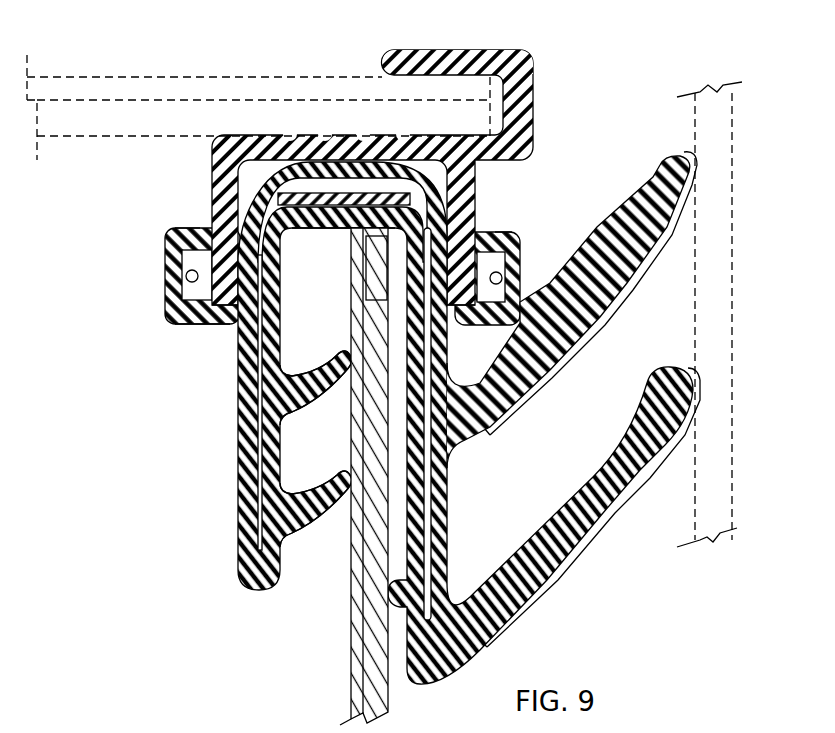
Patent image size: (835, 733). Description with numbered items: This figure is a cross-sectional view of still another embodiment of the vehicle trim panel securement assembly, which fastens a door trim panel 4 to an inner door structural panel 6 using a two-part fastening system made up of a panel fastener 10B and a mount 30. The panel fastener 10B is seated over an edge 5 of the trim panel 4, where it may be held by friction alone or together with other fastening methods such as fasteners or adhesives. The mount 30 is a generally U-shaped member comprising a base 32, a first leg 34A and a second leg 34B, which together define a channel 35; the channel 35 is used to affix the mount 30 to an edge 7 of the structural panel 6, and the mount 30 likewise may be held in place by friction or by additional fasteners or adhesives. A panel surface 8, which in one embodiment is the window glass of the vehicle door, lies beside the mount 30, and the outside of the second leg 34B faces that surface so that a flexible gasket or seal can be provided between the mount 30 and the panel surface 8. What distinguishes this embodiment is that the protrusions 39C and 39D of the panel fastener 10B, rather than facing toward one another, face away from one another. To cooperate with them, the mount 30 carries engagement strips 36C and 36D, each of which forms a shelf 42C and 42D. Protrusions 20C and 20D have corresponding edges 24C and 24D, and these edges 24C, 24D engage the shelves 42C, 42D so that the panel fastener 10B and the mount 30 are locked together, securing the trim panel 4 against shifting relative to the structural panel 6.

The door trim panel 4 is at (51, 76).
The edge of trim panel 5 is at (531, 112).
The inner door structural panel 6 is at (388, 693).
The edge of structural panel 7 is at (351, 636).
The panel surface 8 is at (735, 142).
The panel fastener 10B is at (538, 46).
The protrusion 20C is at (170, 322).
The protrusion 20D is at (520, 316).
The edge 24C is at (222, 322).
The edge 24D is at (490, 305).
The mount 30 is at (226, 502).
The base 32 is at (334, 229).
The first leg 34A is at (238, 408).
The second leg 34B is at (448, 484).
The channel 35 is at (307, 475).
The engagement strip 36C is at (153, 295).
The engagement strip 36D is at (535, 275).
The protrusion 39C is at (196, 232).
The protrusion 39D is at (489, 235).
The shelf 42C is at (166, 258).
The shelf 42D is at (522, 252).